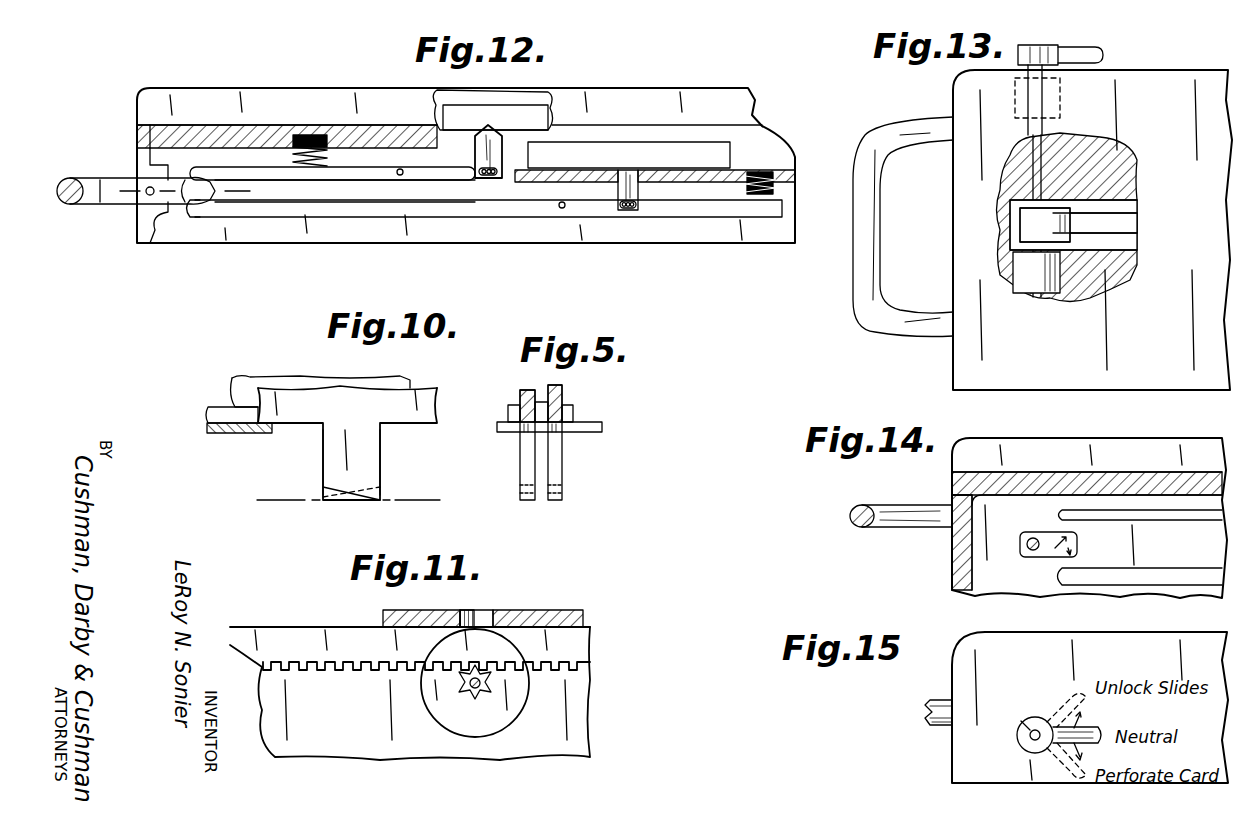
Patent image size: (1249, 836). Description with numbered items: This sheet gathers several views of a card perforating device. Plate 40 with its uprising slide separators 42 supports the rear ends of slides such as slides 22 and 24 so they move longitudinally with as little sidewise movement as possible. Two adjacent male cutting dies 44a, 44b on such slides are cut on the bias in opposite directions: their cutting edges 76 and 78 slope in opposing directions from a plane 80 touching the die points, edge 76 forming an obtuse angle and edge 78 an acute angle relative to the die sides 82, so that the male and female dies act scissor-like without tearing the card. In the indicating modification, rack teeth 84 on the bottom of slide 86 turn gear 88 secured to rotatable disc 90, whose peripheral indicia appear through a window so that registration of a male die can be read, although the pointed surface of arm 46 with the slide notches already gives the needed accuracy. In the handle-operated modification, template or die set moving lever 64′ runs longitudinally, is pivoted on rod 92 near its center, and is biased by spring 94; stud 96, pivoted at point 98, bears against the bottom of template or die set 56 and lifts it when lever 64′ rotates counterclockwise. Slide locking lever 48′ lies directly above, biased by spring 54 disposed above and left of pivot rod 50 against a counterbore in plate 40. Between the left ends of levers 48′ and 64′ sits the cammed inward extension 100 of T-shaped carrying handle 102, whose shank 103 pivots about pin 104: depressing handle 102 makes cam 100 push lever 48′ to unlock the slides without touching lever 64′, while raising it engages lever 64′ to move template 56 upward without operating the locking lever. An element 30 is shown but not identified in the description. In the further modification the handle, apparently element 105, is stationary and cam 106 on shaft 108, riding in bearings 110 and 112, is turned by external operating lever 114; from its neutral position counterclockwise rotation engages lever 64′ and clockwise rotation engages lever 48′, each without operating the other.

In FIG. 10, the slide 22 is at (250, 378).
In FIG. 5, the slide 22 is at (555, 385).
In FIG. 10, the slide 24 is at (290, 388).
In FIG. 5, the slide 24 is at (527, 390).
In FIG. 12, the housing block 30 is at (520, 95).
In FIG. 12, the plate 40 is at (408, 146).
In FIG. 10, the plate 40 is at (240, 433).
In FIG. 5, the plate 40 is at (585, 424).
In FIG. 10, the slide separators 42 is at (212, 407).
In FIG. 5, the slide separators 42 is at (514, 405).
In FIG. 10, the male cutting die 44a is at (382, 460).
In FIG. 5, the male cutting die 44a is at (525, 466).
In FIG. 10, the male cutting die 44b is at (323, 492).
In FIG. 5, the male cutting die 44b is at (556, 455).
In FIG. 12, the arm 46 is at (474, 150).
In FIG. 12, the slide locking lever 48′ is at (266, 167).
In FIG. 13, the slide locking lever 48′ is at (1122, 210).
In FIG. 14, the slide locking lever 48′ is at (1148, 524).
In FIG. 12, the pivot rod 50 is at (404, 176).
In FIG. 12, the spring 54 is at (330, 157).
In FIG. 12, the template or die set 56 is at (732, 152).
In FIG. 12, the template or die set moving lever 64′ is at (388, 215).
In FIG. 14, the template or die set moving lever 64′ is at (1182, 573).
In FIG. 10, the cutting edge 76 is at (358, 500).
In FIG. 5, the cutting edge 76 is at (528, 500).
In FIG. 10, the cutting edge 78 is at (345, 500).
In FIG. 5, the cutting edge 78 is at (565, 490).
In FIG. 10, the plane 80 is at (410, 500).
In FIG. 10, the sides of the dies 82 is at (323, 462).
In FIG. 11, the rack teeth 84 is at (328, 670).
In FIG. 11, the slide 86 is at (290, 630).
In FIG. 11, the gear 88 is at (496, 684).
In FIG. 11, the rotatable disc 90 is at (528, 712).
In FIG. 12, the pivot rod 92 is at (566, 210).
In FIG. 11, the pivot rod 92 is at (490, 610).
In FIG. 12, the spring 94 is at (745, 188).
In FIG. 12, the stud 96 is at (617, 190).
In FIG. 12, the pivot point 98 is at (630, 210).
In FIG. 12, the inward extension (cam) 100 is at (215, 217).
In FIG. 12, the carrying handle 102 is at (88, 168).
In FIG. 12, the shank 103 is at (100, 204).
In FIG. 12, the pin 104 is at (147, 188).
In FIG. 13, the handle 105 is at (908, 118).
In FIG. 14, the handle 105 is at (905, 504).
In FIG. 15, the handle 105 is at (932, 700).
In FIG. 13, the cam 106 is at (1105, 272).
In FIG. 14, the cam 106 is at (1078, 540).
In FIG. 13, the shaft 108 is at (1045, 130).
In FIG. 14, the shaft 108 is at (1033, 552).
In FIG. 15, the shaft 108 is at (1024, 728).
In FIG. 13, the bearing 110 is at (1028, 298).
In FIG. 13, the bearing 112 is at (1062, 98).
In FIG. 13, the operating lever 114 is at (1080, 46).
In FIG. 15, the operating lever 114 is at (1090, 727).